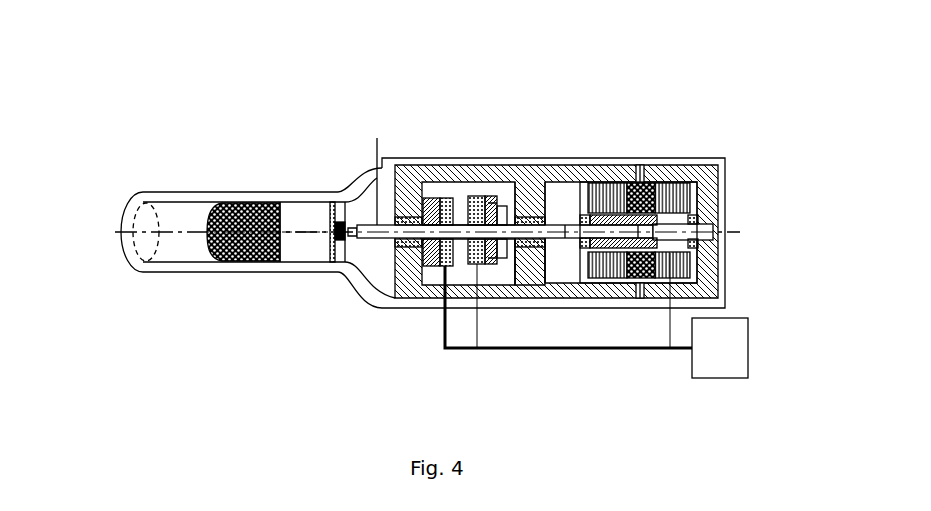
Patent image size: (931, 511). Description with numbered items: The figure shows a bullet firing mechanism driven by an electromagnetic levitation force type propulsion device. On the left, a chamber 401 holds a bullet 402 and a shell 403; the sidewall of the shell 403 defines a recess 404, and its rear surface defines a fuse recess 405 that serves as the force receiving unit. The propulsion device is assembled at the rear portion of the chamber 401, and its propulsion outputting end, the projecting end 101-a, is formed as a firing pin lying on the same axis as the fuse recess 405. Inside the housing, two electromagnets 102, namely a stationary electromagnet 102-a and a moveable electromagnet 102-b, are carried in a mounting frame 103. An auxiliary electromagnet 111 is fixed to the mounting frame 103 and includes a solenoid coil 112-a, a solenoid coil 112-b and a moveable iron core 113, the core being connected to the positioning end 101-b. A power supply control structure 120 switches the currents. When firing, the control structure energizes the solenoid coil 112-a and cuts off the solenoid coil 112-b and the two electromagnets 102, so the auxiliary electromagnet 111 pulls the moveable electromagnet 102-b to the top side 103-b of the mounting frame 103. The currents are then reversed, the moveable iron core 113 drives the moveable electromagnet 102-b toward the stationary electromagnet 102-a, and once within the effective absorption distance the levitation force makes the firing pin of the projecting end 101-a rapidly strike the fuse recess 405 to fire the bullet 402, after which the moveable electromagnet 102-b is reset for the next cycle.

The chamber 401 is at (362, 200).
The bullet 402 is at (220, 210).
The shell 403 is at (312, 230).
The recess 404 is at (330, 218).
The fuse recess 405 is at (338, 223).
The projecting end 101-a is at (437, 138).
The positioning end 101-b is at (539, 298).
The electromagnets 102 is at (508, 251).
The stationary electromagnet 102-a is at (440, 203).
The moveable electromagnet 102-b is at (483, 203).
The mounting frame 103 is at (538, 170).
The top side of the mounting frame 103-b is at (517, 285).
The auxiliary electromagnet 111 is at (697, 217).
The solenoid coil 112-a is at (770, 138).
The solenoid coil 112-b is at (688, 138).
The moveable iron core 113 is at (613, 265).
The power supply control structure 120 is at (710, 380).